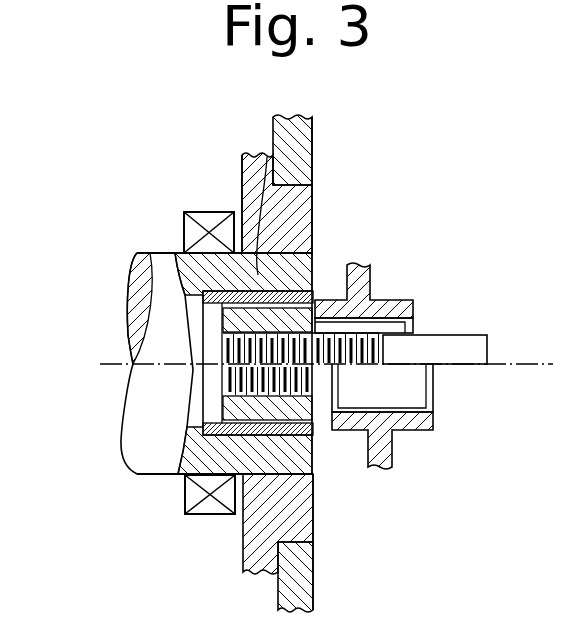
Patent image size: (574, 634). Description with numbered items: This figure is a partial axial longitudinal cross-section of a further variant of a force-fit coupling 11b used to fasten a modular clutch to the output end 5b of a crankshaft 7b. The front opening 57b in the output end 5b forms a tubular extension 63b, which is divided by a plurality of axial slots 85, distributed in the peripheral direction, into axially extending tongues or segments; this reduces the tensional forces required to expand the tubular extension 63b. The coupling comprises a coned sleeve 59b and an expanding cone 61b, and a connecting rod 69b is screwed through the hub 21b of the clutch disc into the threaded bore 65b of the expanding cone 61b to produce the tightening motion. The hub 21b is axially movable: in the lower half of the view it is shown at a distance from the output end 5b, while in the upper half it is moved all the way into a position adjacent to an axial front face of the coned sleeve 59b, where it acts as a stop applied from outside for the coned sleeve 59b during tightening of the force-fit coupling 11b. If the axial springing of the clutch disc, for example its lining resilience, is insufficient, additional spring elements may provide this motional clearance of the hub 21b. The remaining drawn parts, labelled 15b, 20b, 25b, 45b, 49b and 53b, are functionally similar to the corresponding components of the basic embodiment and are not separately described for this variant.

The output end 5b is at (178, 282).
The crankshaft 7b is at (142, 421).
The force-fit coupling 11b is at (190, 525).
The upper bearing 15b is at (192, 246).
The axis 20b is at (103, 366).
The hub 21b is at (400, 312).
The lower housing wall 25b is at (336, 556).
The housing block 45b is at (290, 215).
The upper housing wall 49b is at (312, 137).
The lower flange wall 53b is at (313, 518).
The front opening 57b is at (288, 295).
The coned sleeve 59b is at (317, 297).
The expanding cone 61b is at (315, 415).
The tubular extension 63b is at (267, 157).
The threaded bore 65b is at (243, 393).
The connecting rod 69b is at (462, 350).
The axial slots 85 is at (260, 462).